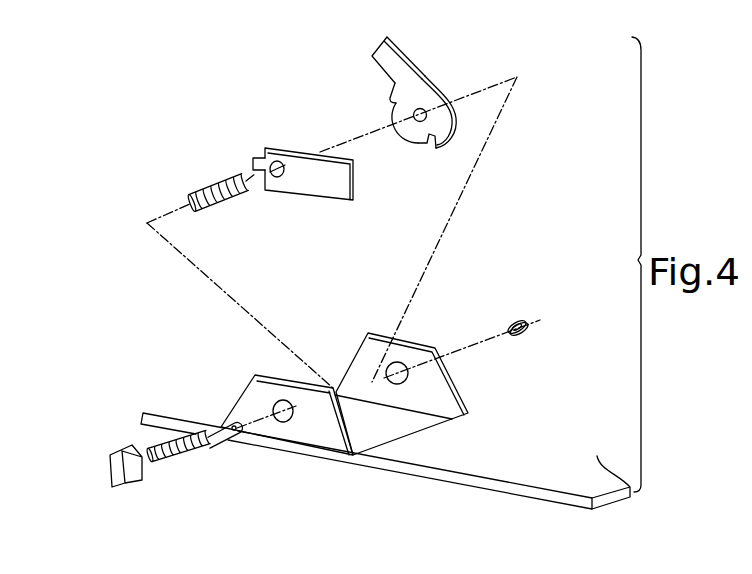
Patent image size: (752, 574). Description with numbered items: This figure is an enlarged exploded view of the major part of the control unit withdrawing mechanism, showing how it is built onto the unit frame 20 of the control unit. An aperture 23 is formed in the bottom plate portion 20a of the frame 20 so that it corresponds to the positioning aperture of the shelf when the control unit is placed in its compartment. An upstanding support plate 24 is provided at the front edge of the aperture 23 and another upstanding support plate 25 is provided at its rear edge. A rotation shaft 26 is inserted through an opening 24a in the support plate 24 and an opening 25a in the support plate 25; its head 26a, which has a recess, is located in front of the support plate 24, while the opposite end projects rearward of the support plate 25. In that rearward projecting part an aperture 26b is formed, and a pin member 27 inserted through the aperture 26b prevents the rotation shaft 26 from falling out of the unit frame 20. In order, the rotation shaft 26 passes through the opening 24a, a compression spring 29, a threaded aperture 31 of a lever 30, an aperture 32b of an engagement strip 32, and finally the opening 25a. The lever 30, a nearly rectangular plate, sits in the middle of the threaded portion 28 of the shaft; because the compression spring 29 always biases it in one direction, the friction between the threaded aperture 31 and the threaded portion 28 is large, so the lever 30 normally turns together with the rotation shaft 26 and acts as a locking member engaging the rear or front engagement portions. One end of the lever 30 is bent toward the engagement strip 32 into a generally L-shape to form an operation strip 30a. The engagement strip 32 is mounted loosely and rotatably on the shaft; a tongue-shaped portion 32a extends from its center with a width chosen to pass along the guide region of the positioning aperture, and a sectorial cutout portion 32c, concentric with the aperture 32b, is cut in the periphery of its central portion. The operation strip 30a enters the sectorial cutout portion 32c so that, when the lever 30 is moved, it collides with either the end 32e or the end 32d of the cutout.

The unit frame 20 is at (390, 479).
The bottom plate portion 20a is at (603, 478).
The aperture 23 is at (417, 423).
The support plate 24 is at (265, 426).
The opening 24a is at (274, 407).
The support plate 25 is at (432, 405).
The opening 25a is at (400, 363).
The rotation shaft 26 is at (159, 478).
The head 26a is at (115, 472).
The aperture 26b is at (240, 436).
The pin member 27 is at (519, 321).
The threaded portion 28 is at (188, 458).
The compression spring 29 is at (213, 189).
The lever 30 is at (296, 173).
The operation strip 30a is at (258, 155).
The threaded aperture 31 is at (280, 160).
The engagement strip 32 is at (421, 102).
The tongue-shaped portion 32a is at (398, 45).
The aperture 32b is at (410, 134).
The sectorial cutout portion 32c is at (417, 121).
The end of cutout portion 32d is at (433, 150).
The end of cutout portion 32e is at (392, 100).